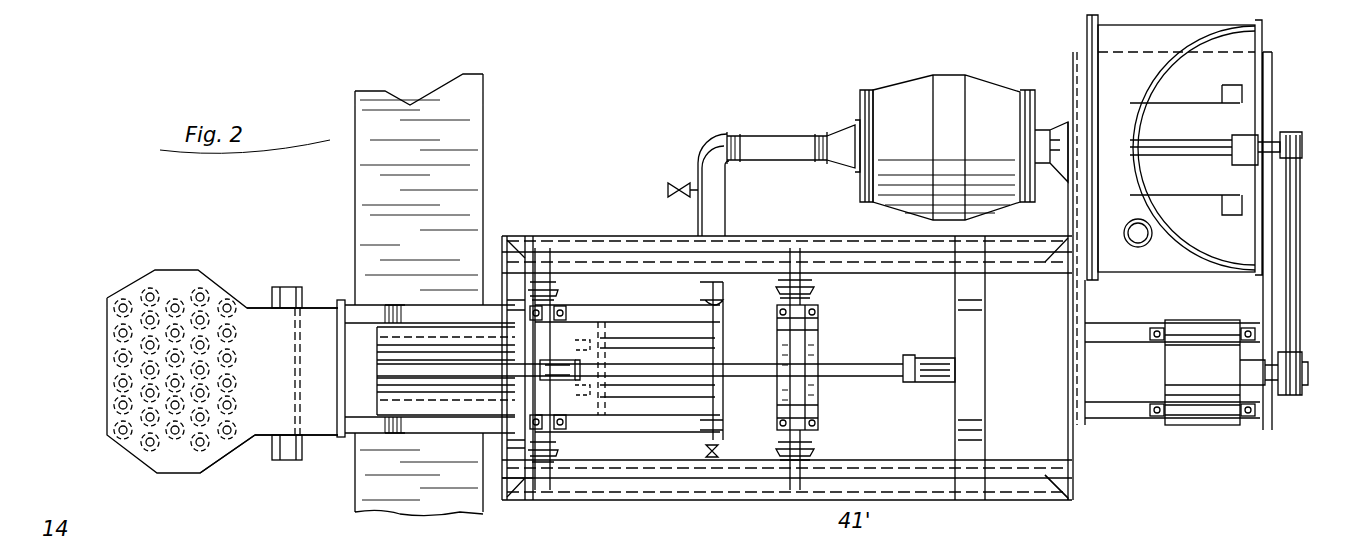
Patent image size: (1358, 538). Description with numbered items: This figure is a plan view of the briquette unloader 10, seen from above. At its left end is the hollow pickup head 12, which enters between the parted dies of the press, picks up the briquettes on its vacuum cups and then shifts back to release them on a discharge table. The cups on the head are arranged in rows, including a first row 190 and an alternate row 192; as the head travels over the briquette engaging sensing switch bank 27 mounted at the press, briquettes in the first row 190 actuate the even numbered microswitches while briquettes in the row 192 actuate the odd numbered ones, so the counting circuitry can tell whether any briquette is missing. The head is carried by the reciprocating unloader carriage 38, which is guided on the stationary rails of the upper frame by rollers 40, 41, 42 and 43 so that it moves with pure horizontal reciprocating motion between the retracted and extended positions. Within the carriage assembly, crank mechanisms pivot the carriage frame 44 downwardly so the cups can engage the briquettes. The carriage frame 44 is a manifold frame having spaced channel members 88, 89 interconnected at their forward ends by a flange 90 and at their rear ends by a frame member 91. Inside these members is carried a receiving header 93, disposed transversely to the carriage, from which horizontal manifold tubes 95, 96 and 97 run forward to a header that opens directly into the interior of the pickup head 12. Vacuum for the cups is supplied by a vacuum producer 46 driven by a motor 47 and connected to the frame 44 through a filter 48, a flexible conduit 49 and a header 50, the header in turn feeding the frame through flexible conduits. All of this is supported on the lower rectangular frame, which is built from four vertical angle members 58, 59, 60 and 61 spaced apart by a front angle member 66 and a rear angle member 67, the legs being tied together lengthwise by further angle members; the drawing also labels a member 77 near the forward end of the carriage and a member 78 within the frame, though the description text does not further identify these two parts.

The briquette unloader 10 is at (578, 503).
The pickup head 12 is at (250, 432).
The sensing switch bank 27 is at (292, 286).
The unloader carriage 38 is at (820, 400).
The roller 40 is at (548, 458).
The roller 41 is at (548, 280).
The roller 42 is at (805, 282).
The roller 43 is at (795, 492).
The carriage frame 44 is at (400, 302).
The vacuum producer 46 is at (1238, 228).
The motor 47 is at (1215, 396).
The filter 48 is at (905, 100).
The flexible conduit 49 is at (762, 148).
The header 50 is at (703, 213).
The vertical angle member 58 is at (505, 497).
The vertical angle member 59 is at (500, 247).
The vertical angle member 60 is at (1070, 234).
The vertical angle member 61 is at (1066, 503).
The front angle member 66 is at (505, 447).
The rear angle member 67 is at (1085, 445).
The mounting bracket 77 is at (518, 301).
The frame post 78 is at (978, 400).
The channel member 88 is at (372, 306).
The channel member 89 is at (400, 425).
The flange 90 is at (346, 405).
The frame member 91 is at (818, 340).
The receiving header 93 is at (600, 405).
The horizontal manifold tube 95 is at (440, 398).
The horizontal manifold tube 96 is at (455, 362).
The horizontal manifold tube 97 is at (435, 345).
The first row of pickup cups 190 is at (232, 452).
The row of pickup cups 192 is at (130, 470).